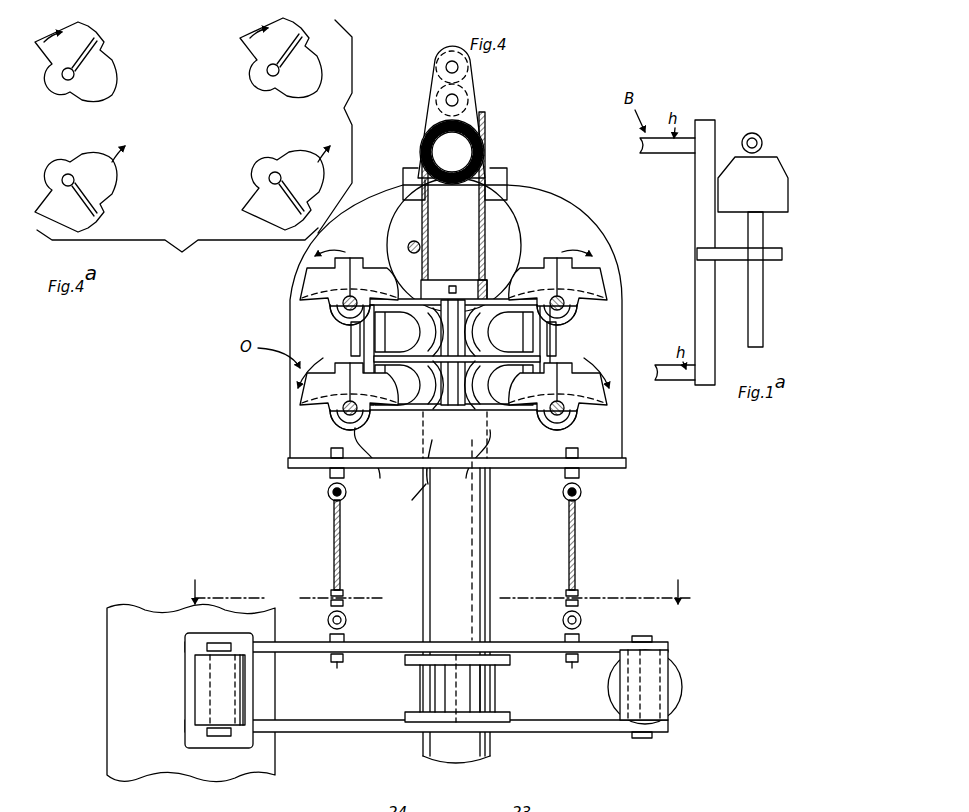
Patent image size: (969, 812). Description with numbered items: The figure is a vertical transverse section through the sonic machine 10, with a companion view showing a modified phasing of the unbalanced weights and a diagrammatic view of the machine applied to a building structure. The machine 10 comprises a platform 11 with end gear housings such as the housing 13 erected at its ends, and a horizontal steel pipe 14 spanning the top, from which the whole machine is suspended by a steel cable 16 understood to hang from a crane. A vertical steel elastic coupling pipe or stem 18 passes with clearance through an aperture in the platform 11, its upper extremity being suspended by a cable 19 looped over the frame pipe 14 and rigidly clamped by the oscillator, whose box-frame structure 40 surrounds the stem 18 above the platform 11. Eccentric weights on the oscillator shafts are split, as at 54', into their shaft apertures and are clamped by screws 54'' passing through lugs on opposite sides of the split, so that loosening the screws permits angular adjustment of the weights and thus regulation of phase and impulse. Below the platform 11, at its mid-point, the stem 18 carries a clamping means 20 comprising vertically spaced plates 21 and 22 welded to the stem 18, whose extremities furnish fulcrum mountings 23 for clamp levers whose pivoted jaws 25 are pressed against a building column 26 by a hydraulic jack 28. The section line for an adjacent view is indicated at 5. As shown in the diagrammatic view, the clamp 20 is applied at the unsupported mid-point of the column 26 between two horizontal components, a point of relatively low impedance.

In FIG. 4, the sonic machine 10 is at (280, 397).
In FIG. 1A, the sonic machine 10 is at (786, 160).
In FIG. 4, the platform 11 is at (292, 468).
In FIG. 4, the end gear housing 13 is at (626, 456).
In FIG. 4, the steel pipe 14 is at (478, 143).
In FIG. 4, the steel cable 16 is at (414, 240).
In FIG. 4, the elastic coupling pipe or stem 18 is at (482, 538).
In FIG. 1A, the elastic coupling pipe or stem 18 is at (764, 308).
In FIG. 4, the cable 19 is at (478, 238).
In FIG. 4, the clamping means 20 is at (292, 638).
In FIG. 1A, the clamping means 20 is at (738, 262).
In FIG. 4, the plate 21 is at (405, 660).
In FIG. 4, the plate 22 is at (405, 713).
In FIG. 4, the fulcrum mountings 23 is at (482, 678).
In FIG. 4, the pivoted jaw 25 is at (190, 667).
In FIG. 4, the building column 26 is at (107, 697).
In FIG. 1A, the building column 26 is at (695, 220).
In FIG. 4, the hydraulic jack 28 is at (684, 674).
In FIG. 4, the box-frame structure 40 is at (572, 345).
In FIG. 4, the split 54' is at (592, 258).
In FIG. 4, the screw 54'' is at (539, 227).
In FIG. 4, the section line 5 is at (436, 591).